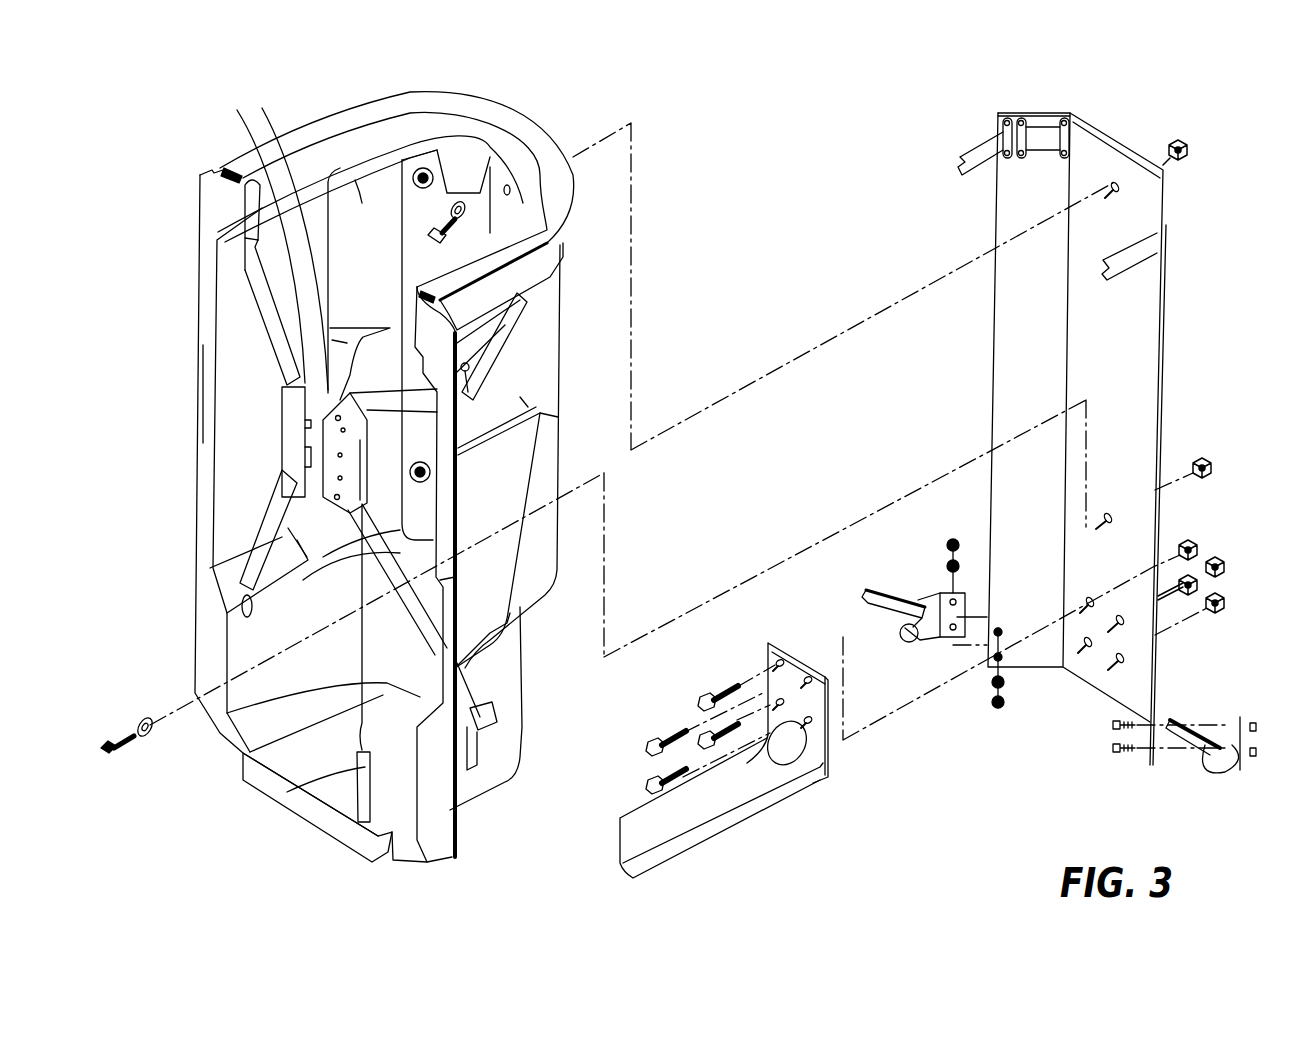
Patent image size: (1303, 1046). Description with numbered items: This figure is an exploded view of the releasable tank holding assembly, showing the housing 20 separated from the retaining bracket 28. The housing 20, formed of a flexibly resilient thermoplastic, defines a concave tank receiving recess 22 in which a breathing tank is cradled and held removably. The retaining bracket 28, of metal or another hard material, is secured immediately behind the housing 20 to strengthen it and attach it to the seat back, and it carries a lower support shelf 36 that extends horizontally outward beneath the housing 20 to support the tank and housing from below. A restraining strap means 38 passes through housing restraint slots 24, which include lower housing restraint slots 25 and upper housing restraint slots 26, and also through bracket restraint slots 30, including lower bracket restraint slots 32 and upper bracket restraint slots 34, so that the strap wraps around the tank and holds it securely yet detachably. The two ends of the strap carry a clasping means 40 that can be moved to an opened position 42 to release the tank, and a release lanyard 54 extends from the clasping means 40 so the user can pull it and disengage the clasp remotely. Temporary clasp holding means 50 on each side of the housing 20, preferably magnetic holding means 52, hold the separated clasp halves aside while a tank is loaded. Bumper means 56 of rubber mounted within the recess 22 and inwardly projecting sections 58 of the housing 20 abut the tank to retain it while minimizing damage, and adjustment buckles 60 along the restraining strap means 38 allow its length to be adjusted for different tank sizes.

The housing 20 is at (563, 180).
The tank receiving recess 22 is at (362, 203).
The housing restraint slots 24 is at (233, 168).
The lower housing restraint slots 25 is at (203, 555).
The upper housing restraint slots 26 is at (240, 262).
The retaining bracket 28 is at (1126, 356).
The bracket restraint slots 30 is at (1003, 112).
The lower bracket restraint slots 32 is at (925, 597).
The upper bracket restraint slots 34 is at (1068, 115).
The lower support shelf 36 is at (723, 809).
The restraining strap means 38 is at (258, 308).
The clasping means 40 is at (240, 114).
The opened position 42 is at (330, 460).
The temporary clasp holding means 50 is at (203, 345).
The magnetic holding means 52 is at (203, 385).
The release lanyard 54 is at (318, 762).
The bumper means 56 is at (423, 178).
The inwardly projecting sections 58 is at (263, 110).
The adjustment buckles 60 is at (487, 730).